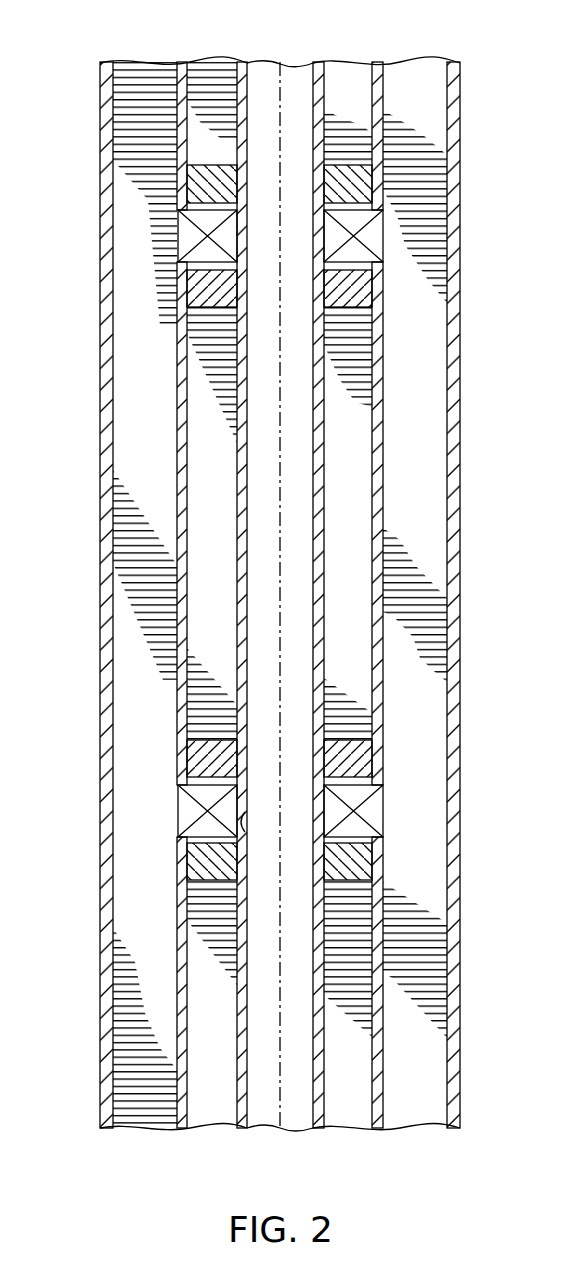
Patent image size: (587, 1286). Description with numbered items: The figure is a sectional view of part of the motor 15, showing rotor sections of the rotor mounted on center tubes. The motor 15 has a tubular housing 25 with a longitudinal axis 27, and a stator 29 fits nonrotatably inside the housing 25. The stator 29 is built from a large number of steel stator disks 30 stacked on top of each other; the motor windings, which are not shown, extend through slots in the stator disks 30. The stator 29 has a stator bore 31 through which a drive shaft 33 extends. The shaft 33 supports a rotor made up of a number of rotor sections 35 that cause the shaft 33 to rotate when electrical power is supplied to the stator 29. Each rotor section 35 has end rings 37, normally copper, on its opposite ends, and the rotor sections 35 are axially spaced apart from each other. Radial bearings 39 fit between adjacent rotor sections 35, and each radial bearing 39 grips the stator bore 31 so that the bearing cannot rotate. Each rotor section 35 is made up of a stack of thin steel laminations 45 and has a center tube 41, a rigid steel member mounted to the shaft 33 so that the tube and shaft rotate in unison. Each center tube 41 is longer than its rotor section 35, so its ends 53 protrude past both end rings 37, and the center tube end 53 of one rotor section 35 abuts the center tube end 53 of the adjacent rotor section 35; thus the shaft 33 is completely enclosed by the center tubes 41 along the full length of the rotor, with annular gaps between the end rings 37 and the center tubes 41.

The motor 15 is at (476, 107).
The tubular housing 25 is at (100, 450).
The longitudinal axis 27 is at (284, 69).
The stator 29 is at (128, 246).
The stator disks 30 is at (126, 93).
The stator bore 31 is at (187, 204).
The drive shaft 33 is at (300, 492).
The rotor sections 35 is at (185, 362).
The end rings 37 is at (203, 767).
The radial bearings 39 is at (187, 815).
The center tube 41 is at (318, 441).
The laminations 45 is at (195, 897).
The center tube ends 53 is at (243, 818).